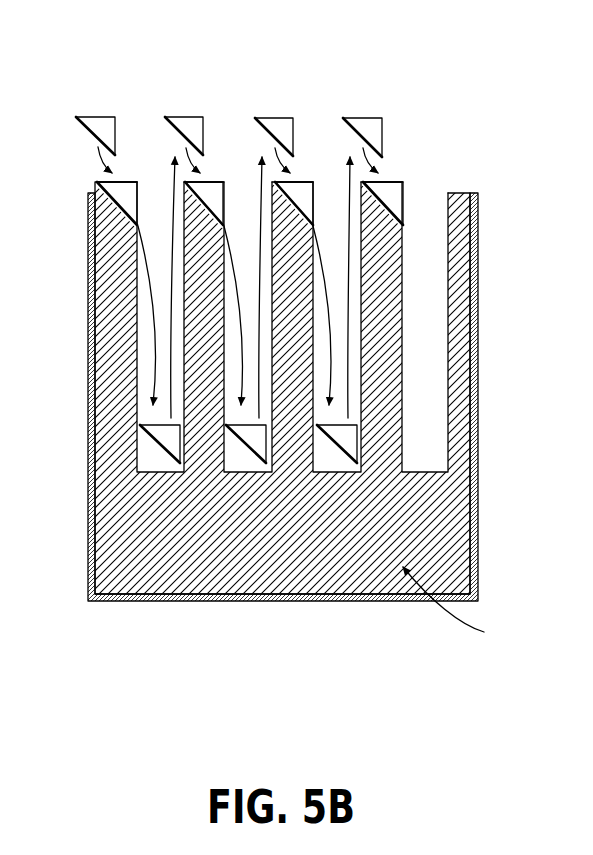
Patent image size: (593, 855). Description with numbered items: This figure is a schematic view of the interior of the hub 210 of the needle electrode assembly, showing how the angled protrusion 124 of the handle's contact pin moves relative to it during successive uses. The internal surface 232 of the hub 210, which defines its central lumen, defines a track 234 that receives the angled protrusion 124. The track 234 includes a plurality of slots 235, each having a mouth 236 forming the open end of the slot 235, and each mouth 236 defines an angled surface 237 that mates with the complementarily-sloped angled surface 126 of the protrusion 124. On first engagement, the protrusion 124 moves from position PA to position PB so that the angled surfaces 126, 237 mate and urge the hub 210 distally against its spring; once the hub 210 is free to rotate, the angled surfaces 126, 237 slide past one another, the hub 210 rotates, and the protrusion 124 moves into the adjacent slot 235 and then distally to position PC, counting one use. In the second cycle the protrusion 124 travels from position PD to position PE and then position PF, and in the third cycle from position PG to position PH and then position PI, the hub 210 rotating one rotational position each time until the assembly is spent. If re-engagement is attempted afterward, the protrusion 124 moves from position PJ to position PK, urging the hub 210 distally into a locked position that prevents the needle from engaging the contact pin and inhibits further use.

The angled protrusion 124 is at (110, 117).
The angled surface 126 is at (80, 138).
The hub 210 is at (478, 492).
The internal surface 232 is at (448, 549).
The track 234 is at (462, 605).
The slot 235 is at (430, 388).
The mouth 236 is at (149, 205).
The angled surface 237 is at (187, 200).
The position PA is at (90, 117).
The position PB is at (125, 182).
The position PC is at (158, 447).
The position PD is at (181, 117).
The position PE is at (215, 182).
The position PF is at (245, 447).
The position PG is at (269, 118).
The position PH is at (307, 182).
The position PI is at (334, 447).
The position PJ is at (358, 118).
The position PK is at (393, 182).